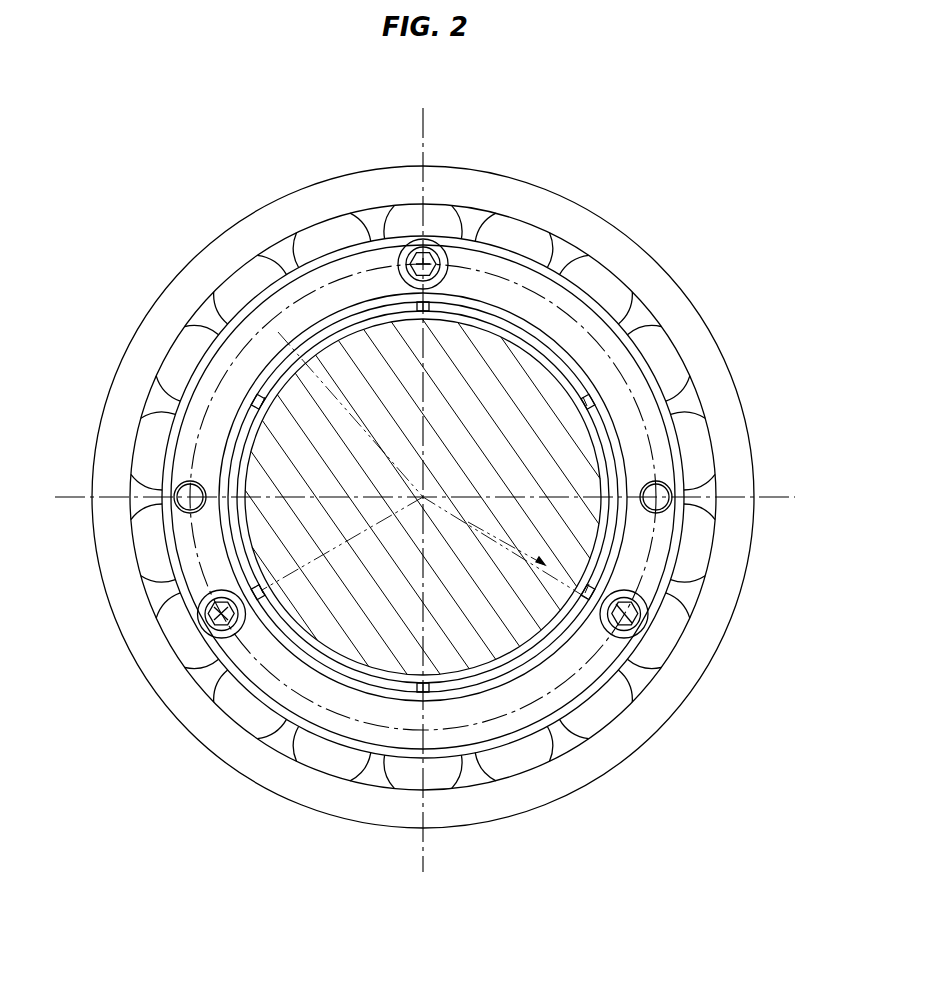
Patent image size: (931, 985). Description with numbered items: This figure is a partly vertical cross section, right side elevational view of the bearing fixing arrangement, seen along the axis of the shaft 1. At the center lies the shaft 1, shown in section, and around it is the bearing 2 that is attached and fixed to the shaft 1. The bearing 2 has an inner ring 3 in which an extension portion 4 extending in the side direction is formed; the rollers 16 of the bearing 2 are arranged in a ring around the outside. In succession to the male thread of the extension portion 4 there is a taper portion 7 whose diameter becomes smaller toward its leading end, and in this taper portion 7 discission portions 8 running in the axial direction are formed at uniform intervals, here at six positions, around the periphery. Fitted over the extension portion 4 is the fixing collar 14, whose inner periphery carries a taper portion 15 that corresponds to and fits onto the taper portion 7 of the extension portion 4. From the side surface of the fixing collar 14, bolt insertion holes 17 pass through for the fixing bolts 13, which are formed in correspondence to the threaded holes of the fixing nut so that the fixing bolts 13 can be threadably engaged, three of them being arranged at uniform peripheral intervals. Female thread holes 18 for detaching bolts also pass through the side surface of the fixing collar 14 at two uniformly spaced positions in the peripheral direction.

The shaft 1 is at (326, 380).
The bearing 2 is at (268, 200).
The inner ring 3 is at (353, 320).
The extension portion 4 is at (423, 497).
The taper portion 7 is at (490, 683).
The discission portions 8 is at (588, 402).
The fixing bolts 13 is at (457, 247).
The fixing collar 14 is at (512, 260).
The taper portion 15 is at (423, 611).
The rollers 16 is at (245, 715).
The bolt insertion holes 17 is at (440, 242).
The female thread holes 18 is at (178, 489).